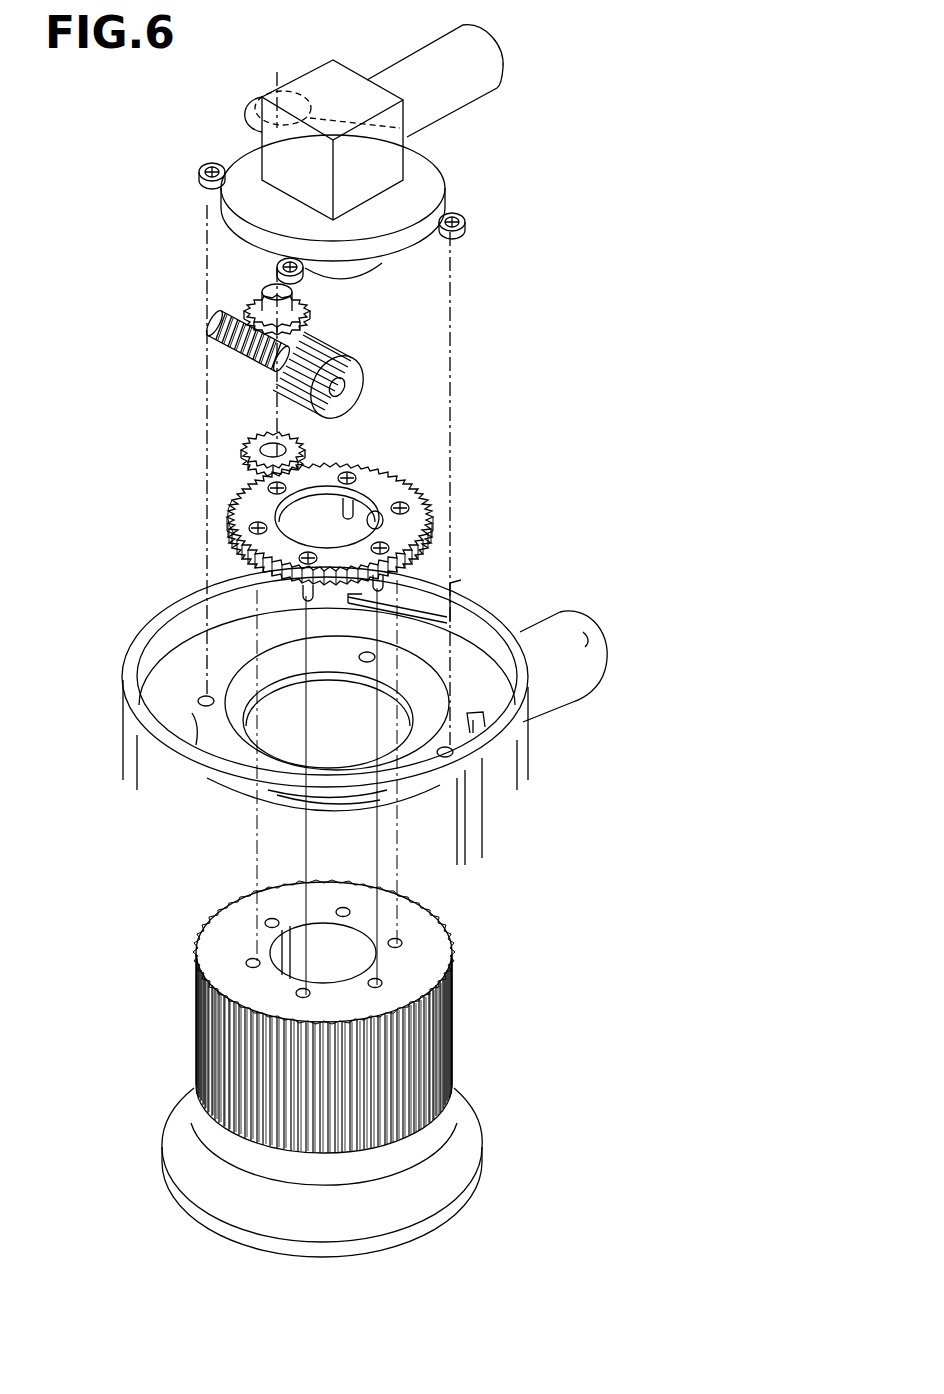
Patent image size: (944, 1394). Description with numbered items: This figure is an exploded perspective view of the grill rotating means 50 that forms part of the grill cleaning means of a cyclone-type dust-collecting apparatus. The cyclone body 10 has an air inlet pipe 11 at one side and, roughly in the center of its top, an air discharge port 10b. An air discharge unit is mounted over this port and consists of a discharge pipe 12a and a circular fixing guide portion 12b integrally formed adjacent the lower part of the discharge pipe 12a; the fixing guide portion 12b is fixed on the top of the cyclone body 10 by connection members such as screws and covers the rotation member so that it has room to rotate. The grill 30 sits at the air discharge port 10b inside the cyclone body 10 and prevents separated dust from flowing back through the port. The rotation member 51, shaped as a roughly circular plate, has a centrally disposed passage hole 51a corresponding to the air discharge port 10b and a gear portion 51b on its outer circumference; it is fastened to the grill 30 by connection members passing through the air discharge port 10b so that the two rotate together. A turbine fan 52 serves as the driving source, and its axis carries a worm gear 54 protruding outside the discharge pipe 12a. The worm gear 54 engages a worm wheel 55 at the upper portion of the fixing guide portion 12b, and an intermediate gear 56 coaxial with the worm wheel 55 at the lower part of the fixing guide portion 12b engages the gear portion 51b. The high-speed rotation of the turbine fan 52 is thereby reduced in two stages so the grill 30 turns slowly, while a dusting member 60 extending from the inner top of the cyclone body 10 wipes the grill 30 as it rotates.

The cyclone body 10 is at (349, 658).
The air discharge port 10b is at (258, 690).
The air inlet pipe 11 is at (580, 640).
The discharge pipe 12a is at (467, 87).
The circular fixing guide portion 12b is at (425, 192).
The grill 30 is at (472, 994).
The grill rotating means 50 is at (537, 283).
The rotation member 51 is at (420, 472).
The passage hole 51a is at (370, 513).
The gear portion 51b is at (232, 522).
The turbine fan 52 is at (362, 377).
The worm gear 54 is at (312, 320).
The worm wheel 55 is at (292, 293).
The intermediate gear 56 is at (300, 432).
The dusting member 60 is at (478, 792).